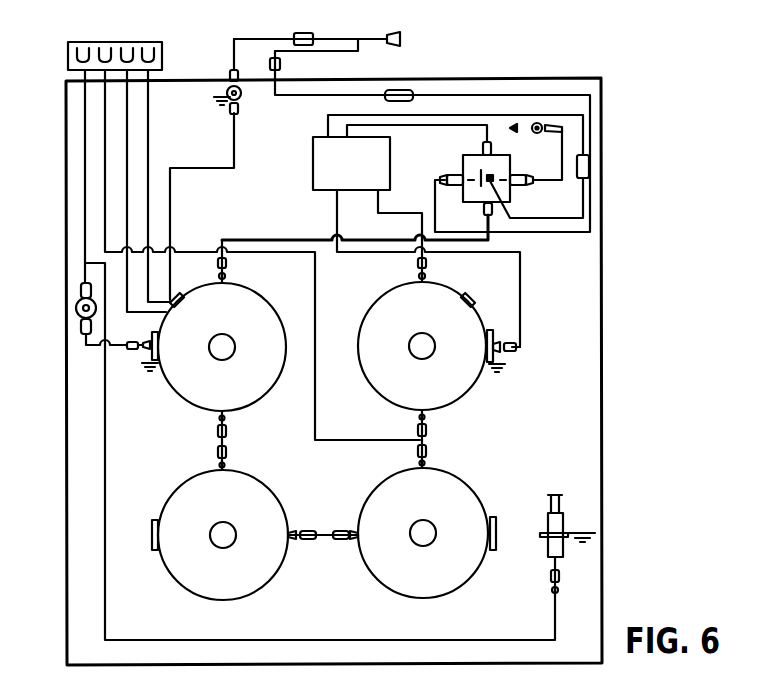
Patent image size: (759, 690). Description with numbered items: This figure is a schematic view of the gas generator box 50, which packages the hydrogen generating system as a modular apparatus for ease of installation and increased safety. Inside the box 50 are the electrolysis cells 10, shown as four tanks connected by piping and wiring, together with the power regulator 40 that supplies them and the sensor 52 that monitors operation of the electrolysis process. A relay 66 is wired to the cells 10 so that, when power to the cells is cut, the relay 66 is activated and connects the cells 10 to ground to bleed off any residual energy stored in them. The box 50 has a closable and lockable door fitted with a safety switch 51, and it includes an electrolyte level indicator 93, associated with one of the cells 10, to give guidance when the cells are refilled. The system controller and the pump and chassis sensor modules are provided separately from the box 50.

The electrolysis cells 10 is at (183, 395).
The power regulator 40 is at (313, 163).
The gas generator box 50 is at (603, 432).
The safety switch 51 is at (563, 520).
The sensor 52 is at (76, 309).
The relay 66 is at (468, 166).
The electrolyte level indicator 93 is at (418, 343).